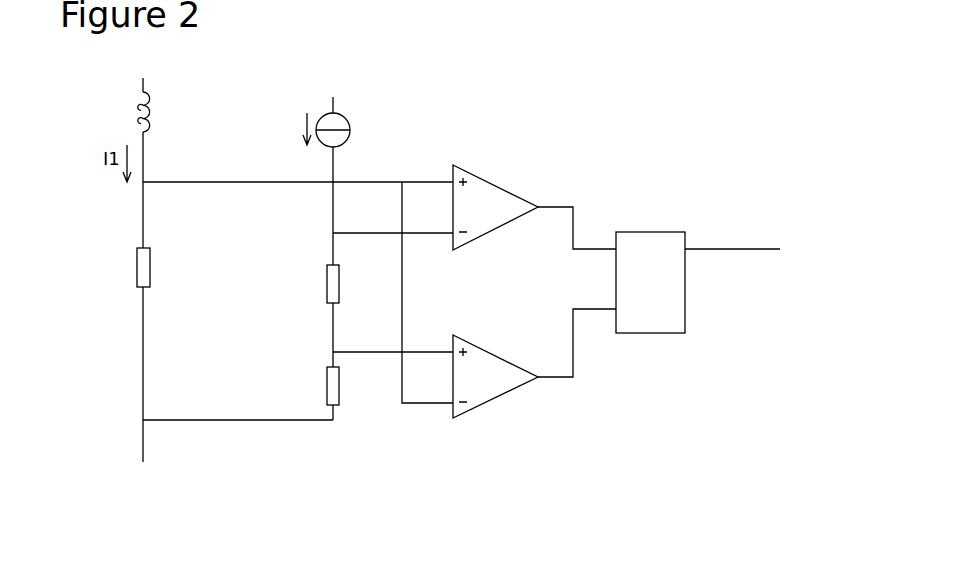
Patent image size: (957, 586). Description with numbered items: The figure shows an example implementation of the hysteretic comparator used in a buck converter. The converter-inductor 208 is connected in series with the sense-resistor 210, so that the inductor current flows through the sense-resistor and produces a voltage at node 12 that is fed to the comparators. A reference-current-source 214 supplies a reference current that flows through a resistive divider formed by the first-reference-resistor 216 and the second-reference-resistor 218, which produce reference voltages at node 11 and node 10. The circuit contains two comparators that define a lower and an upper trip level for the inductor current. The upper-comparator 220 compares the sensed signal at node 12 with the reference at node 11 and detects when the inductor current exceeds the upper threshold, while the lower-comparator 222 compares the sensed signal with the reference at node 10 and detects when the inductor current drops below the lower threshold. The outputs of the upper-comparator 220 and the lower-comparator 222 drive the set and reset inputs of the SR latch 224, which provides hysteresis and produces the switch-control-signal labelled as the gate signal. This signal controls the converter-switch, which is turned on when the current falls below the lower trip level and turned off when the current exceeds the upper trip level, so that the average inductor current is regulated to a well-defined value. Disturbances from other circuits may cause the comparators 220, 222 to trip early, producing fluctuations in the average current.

The converter-inductor 208 is at (138, 125).
The sense-resistor 210 is at (137, 267).
The reference-current-source 214 is at (345, 122).
The first-reference-resistor 216 is at (339, 392).
The second-reference-resistor 218 is at (327, 277).
The upper-comparator 220 is at (475, 178).
The lower-comparator 222 is at (493, 400).
The SR latch 224 is at (642, 232).
The node 10 is at (393, 335).
The node 11 is at (393, 221).
The node 12 is at (298, 169).